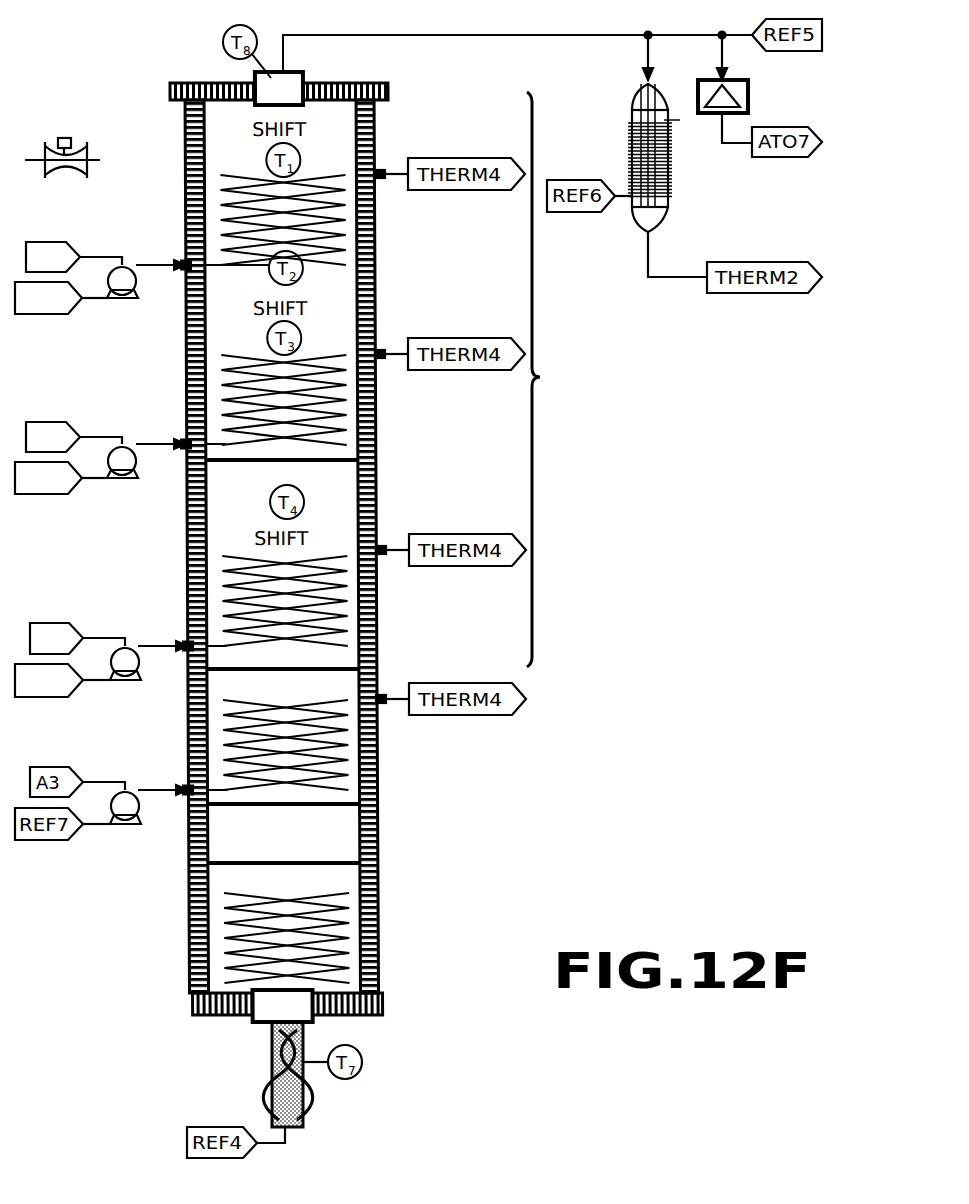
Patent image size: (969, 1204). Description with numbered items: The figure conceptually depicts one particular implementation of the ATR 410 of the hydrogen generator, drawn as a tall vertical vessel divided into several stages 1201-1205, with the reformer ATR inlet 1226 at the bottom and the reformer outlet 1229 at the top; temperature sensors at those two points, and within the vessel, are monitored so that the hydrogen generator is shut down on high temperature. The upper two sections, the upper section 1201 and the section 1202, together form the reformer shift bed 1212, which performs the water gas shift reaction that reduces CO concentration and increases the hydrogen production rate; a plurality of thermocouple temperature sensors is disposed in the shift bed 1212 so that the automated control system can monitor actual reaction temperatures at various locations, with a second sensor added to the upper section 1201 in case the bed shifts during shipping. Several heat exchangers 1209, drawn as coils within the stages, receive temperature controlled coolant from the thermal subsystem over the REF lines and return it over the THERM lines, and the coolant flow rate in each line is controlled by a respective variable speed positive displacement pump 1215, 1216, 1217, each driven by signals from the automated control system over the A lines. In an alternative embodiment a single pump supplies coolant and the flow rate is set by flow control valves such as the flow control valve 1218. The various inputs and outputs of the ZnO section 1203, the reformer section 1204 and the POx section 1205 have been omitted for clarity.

The ATR 410 is at (134, 65).
The flow control valve 1218 is at (86, 140).
The reformer outlet 1229 is at (292, 80).
The upper section 1201 is at (343, 143).
The section 1202 is at (343, 480).
The section 1203 is at (347, 688).
The section 1204 is at (347, 818).
The section 1205 is at (347, 878).
The heat exchanger 1209 is at (226, 217).
The reformer shift bed 1212 is at (565, 379).
The variable speed pump 1215 is at (119, 298).
The variable speed pump 1216 is at (119, 478).
The variable speed pump 1217 is at (125, 680).
The reformer ATR inlet 1226 is at (270, 1076).